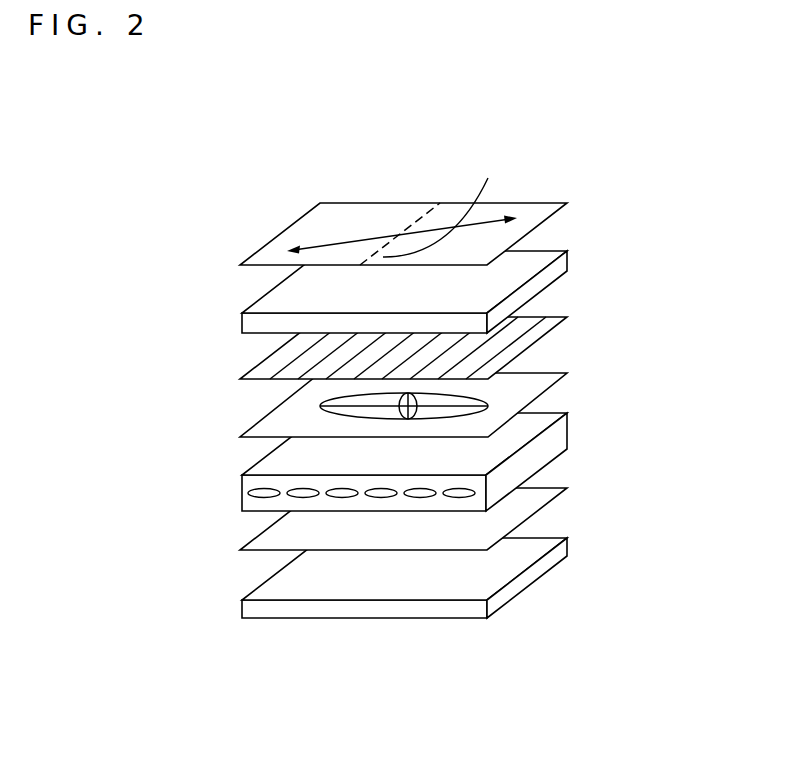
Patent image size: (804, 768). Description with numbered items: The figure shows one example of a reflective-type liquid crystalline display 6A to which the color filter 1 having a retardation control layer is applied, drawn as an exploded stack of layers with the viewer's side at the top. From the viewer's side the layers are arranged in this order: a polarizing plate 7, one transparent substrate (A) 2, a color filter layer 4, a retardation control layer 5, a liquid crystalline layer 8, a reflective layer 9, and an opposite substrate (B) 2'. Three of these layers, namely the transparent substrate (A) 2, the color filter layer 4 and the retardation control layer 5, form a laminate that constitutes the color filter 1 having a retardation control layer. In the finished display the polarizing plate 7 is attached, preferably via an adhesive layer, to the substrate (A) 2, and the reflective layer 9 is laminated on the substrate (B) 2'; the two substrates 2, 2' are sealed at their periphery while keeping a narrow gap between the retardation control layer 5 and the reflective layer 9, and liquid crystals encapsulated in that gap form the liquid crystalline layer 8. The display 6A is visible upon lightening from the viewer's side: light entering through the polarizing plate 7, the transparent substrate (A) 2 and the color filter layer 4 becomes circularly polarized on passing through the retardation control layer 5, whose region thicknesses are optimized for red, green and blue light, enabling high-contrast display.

The color filter having a retardation control layer 1 is at (491, 344).
The transparent substrate (A) 2 is at (447, 292).
The opposite substrate (B) 2' is at (452, 578).
The color filter layer 4 is at (537, 332).
The retardation control layer 5 is at (537, 388).
The liquid crystalline display 6A is at (196, 266).
The polarizing plate 7 is at (536, 220).
The liquid crystalline layer 8 is at (537, 447).
The reflective layer 9 is at (537, 502).